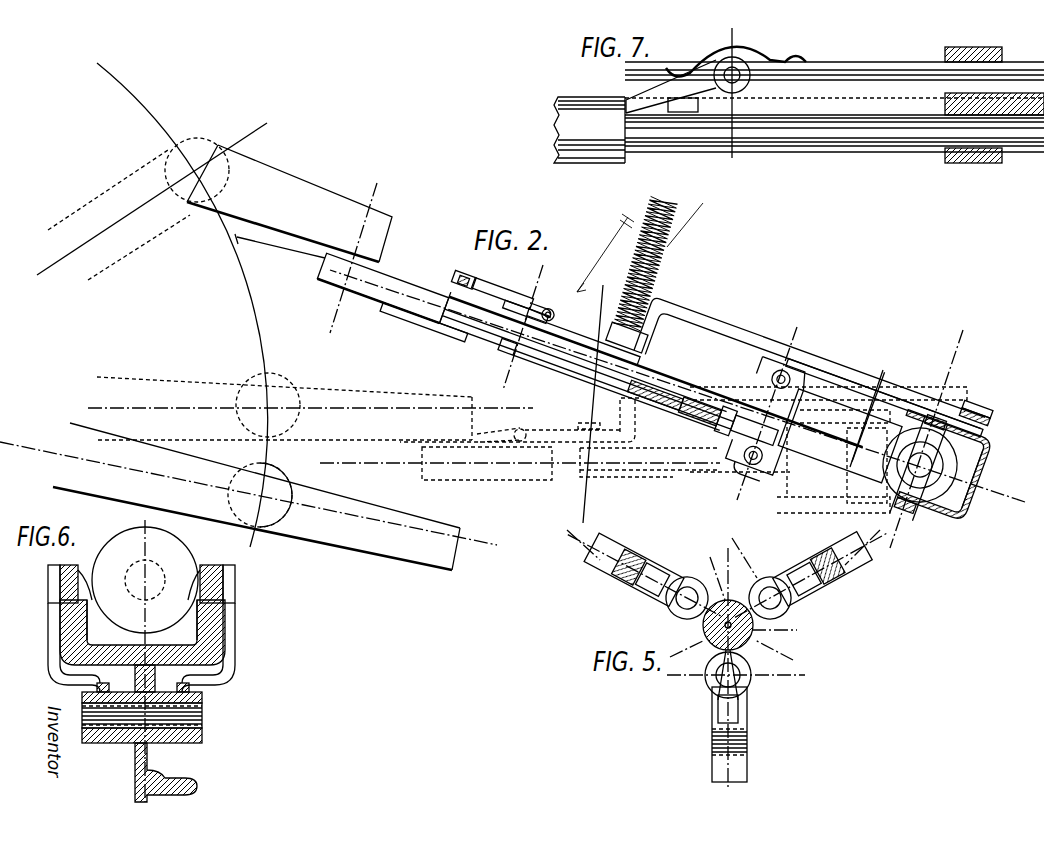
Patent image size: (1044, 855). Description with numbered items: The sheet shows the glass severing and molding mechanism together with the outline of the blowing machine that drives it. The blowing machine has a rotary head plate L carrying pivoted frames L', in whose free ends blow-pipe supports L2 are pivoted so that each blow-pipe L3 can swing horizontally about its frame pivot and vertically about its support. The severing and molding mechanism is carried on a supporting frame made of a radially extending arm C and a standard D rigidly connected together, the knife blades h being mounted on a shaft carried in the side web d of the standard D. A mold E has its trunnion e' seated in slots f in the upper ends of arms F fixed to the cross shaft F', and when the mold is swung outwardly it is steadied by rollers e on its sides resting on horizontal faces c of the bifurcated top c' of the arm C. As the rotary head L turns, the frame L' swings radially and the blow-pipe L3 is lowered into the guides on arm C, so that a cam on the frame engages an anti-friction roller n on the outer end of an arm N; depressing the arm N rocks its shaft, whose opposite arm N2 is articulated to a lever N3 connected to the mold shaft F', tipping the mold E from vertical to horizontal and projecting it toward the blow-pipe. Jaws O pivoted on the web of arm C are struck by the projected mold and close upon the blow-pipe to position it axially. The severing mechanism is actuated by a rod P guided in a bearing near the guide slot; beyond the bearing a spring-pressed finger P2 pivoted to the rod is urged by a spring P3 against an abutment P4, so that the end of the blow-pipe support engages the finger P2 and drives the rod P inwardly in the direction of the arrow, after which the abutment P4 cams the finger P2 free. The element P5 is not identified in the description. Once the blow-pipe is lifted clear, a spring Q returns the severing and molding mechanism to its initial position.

In FIG. 7, the rod P is at (893, 75).
In FIG. 2, the rod P is at (563, 318).
In FIG. 7, the spring-pressed finger P2 is at (688, 82).
In FIG. 7, the spring P3 is at (736, 49).
In FIG. 7, the abutment P4 is at (689, 71).
In FIG. 2, the arrow / direction of motion P5 is at (605, 280).
In FIG. 2, the rotary head plate L is at (152, 201).
In FIG. 5, the rotary head plate L is at (765, 659).
In FIG. 2, the frame L' is at (289, 203).
In FIG. 7, the blow-pipe support L2 is at (589, 114).
In FIG. 2, the blow-pipe support L2 is at (383, 280).
In FIG. 2, the blow-pipe L3 is at (422, 323).
In FIG. 2, the anti-friction roller n is at (467, 279).
In FIG. 2, the arm N is at (527, 303).
In FIG. 2, the arm N2 is at (611, 384).
In FIG. 2, the lever N3 is at (674, 407).
In FIG. 2, the spring Q is at (652, 261).
In FIG. 2, the radially extending arm C is at (702, 397).
In FIG. 6, the radially extending arm C is at (140, 768).
In FIG. 2, the jaws O is at (786, 372).
In FIG. 5, the jaws O is at (650, 585).
In FIG. 2, the horizontal faces c is at (884, 387).
In FIG. 6, the horizontal faces c is at (122, 630).
In FIG. 2, the bifurcated top c' is at (857, 410).
In FIG. 6, the bifurcated top c' is at (176, 624).
In FIG. 2, the standard D is at (970, 490).
In FIG. 2, the side web d is at (985, 448).
In FIG. 2, the blades h is at (986, 419).
In FIG. 2, the mold E is at (920, 488).
In FIG. 6, the mold E is at (180, 578).
In FIG. 6, the rollers e is at (159, 572).
In FIG. 6, the trunnion e' is at (164, 564).
In FIG. 6, the slots f is at (48, 583).
In FIG. 6, the arms F is at (138, 674).
In FIG. 6, the cross shaft F' is at (126, 705).